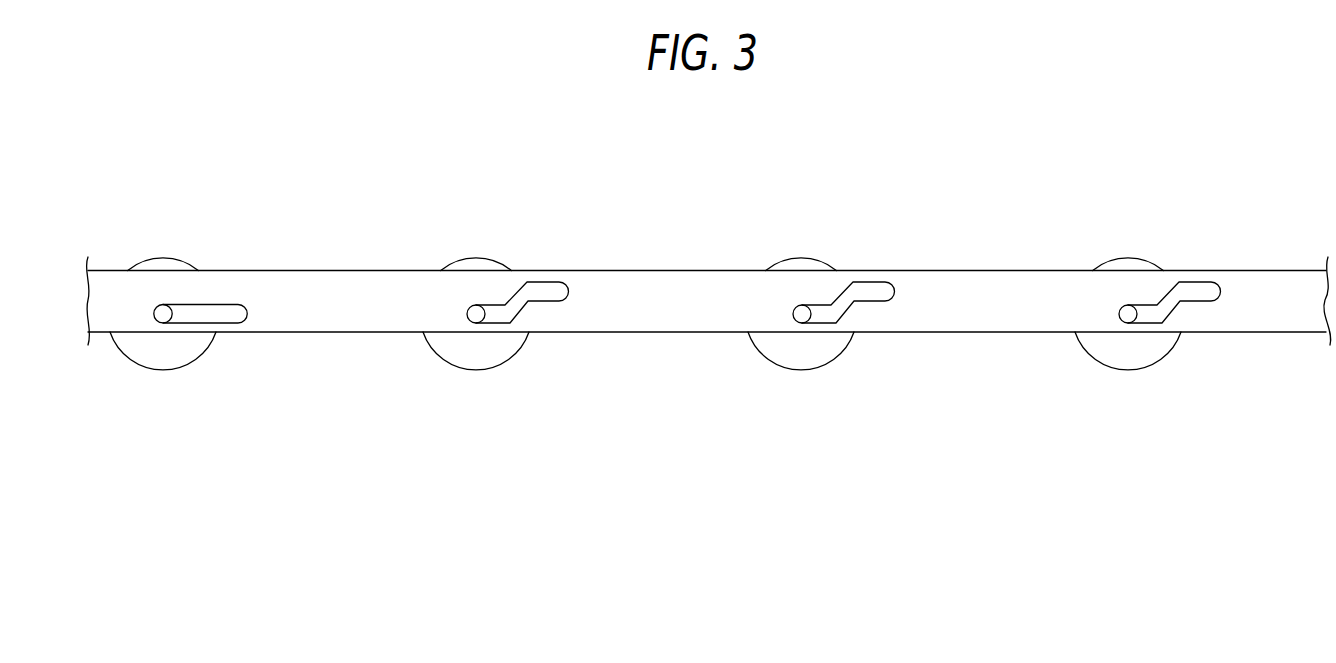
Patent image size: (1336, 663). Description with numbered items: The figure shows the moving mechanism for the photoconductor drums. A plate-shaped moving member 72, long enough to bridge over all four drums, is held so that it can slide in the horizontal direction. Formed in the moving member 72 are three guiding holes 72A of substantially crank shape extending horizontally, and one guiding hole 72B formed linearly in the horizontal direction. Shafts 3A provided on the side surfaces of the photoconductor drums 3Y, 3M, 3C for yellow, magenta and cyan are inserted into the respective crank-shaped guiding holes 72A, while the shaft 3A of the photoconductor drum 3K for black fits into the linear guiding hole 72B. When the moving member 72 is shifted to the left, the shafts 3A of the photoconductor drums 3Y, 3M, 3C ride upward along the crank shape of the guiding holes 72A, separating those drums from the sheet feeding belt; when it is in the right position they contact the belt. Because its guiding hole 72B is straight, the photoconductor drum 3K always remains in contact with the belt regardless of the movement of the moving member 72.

The photoconductor drum 3K is at (163, 258).
The photoconductor drum 3C is at (476, 258).
The photoconductor drum 3M is at (801, 258).
The photoconductor drum 3Y is at (1128, 258).
The shaft 3A is at (162, 315).
The moving member 72 is at (1275, 295).
The guiding hole 72A is at (555, 292).
The guiding hole 72B is at (220, 313).